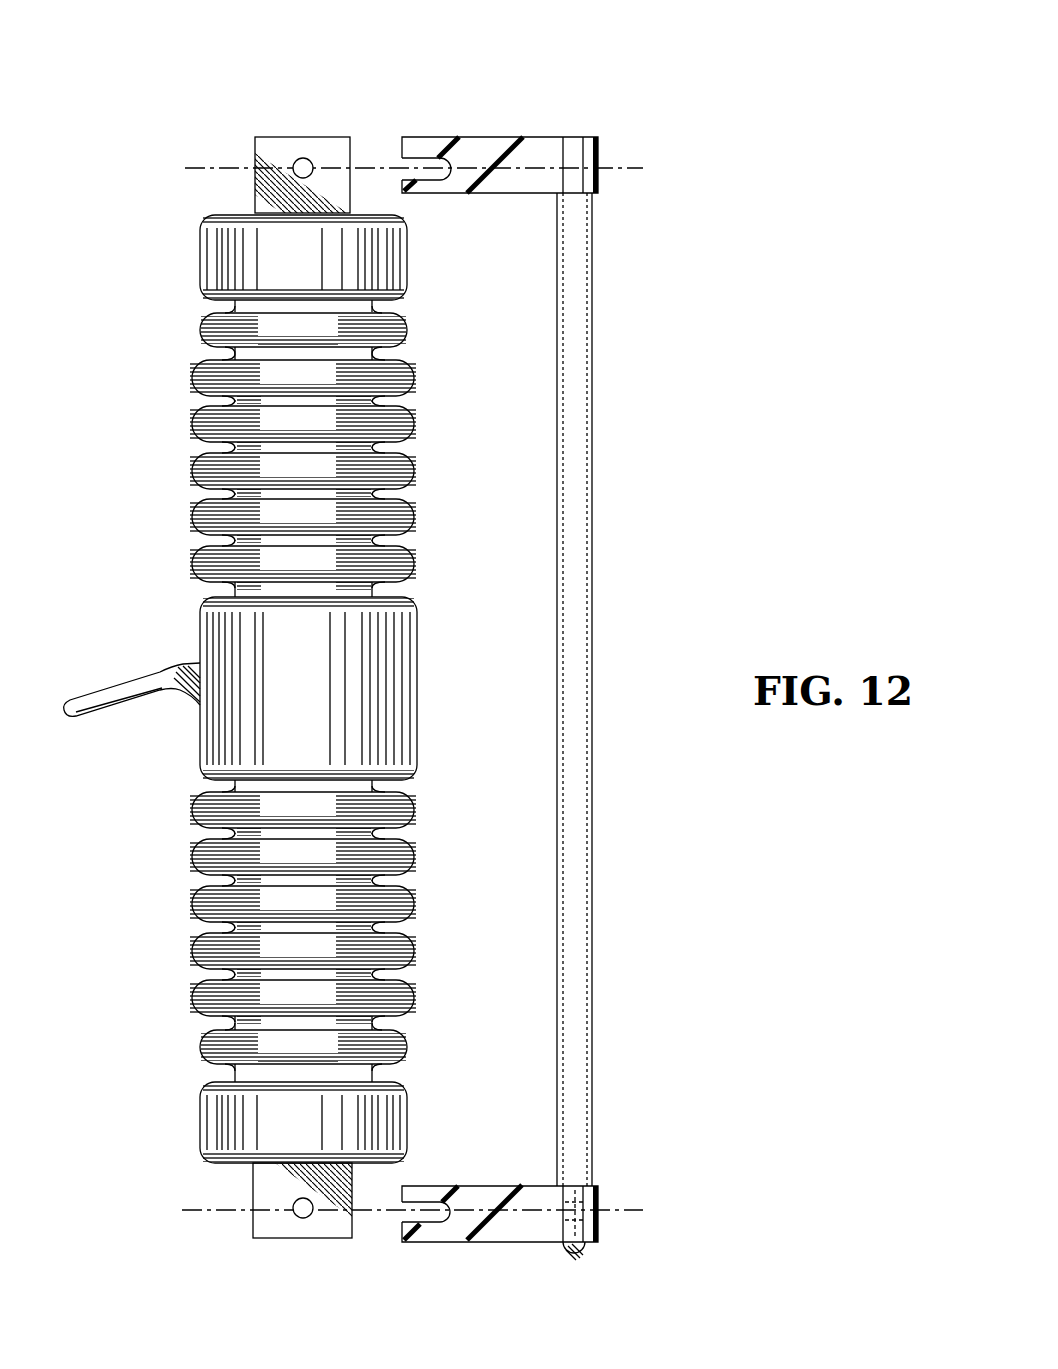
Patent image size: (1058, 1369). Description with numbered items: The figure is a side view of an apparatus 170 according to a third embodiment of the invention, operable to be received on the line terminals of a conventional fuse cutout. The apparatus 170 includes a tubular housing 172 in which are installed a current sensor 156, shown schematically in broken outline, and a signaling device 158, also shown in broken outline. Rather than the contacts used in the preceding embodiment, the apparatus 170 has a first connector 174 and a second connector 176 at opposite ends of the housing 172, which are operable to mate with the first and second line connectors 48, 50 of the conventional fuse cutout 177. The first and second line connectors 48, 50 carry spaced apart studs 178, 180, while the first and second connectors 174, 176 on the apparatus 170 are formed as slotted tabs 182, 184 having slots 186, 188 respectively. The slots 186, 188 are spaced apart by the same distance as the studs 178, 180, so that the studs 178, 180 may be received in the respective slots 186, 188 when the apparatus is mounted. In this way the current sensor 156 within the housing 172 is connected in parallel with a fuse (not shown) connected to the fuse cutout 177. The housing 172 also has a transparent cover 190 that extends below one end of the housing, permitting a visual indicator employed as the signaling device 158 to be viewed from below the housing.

The first line connector 48 is at (301, 133).
The second line connector 50 is at (304, 1247).
The current sensor 156 is at (572, 533).
The signaling device 158 is at (600, 1203).
The apparatus 170 is at (520, 86).
The tubular housing 172 is at (593, 373).
The first connector 174 is at (538, 152).
The second connector 176 is at (158, 278).
The conventional fuse cutout 177 is at (542, 1228).
The stud 178 is at (296, 174).
The stud 180 is at (296, 1203).
The slotted tab 182 is at (425, 148).
The slotted tab 184 is at (425, 1237).
The slot 186 is at (398, 168).
The slot 188 is at (398, 1211).
The transparent cover 190 is at (580, 1264).